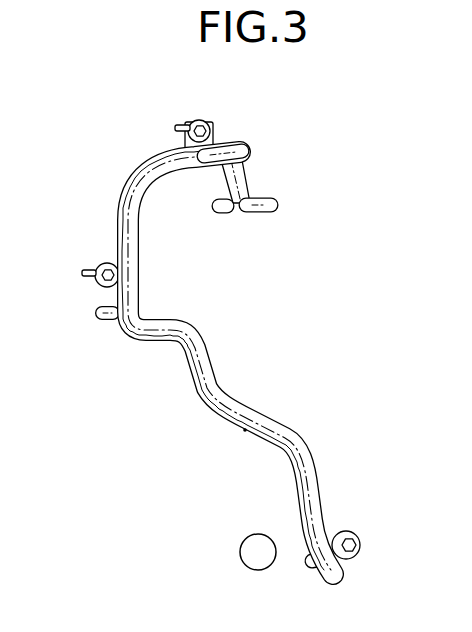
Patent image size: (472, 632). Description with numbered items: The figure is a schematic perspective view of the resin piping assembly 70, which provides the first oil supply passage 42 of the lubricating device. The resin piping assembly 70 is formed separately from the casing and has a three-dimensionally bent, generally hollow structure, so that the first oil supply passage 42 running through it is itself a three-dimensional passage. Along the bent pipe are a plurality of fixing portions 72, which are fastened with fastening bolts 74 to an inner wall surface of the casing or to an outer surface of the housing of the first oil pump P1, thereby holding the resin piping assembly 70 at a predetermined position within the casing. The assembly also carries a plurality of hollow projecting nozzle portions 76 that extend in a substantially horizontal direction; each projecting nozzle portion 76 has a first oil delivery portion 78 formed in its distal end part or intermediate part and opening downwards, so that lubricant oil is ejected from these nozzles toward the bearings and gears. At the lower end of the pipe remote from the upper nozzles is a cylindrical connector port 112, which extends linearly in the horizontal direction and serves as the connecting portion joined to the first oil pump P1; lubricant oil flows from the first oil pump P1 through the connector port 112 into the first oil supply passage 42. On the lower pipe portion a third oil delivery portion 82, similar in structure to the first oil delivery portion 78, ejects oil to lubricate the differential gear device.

The resin piping assembly 70 is at (97, 161).
The fixing portions 72 is at (213, 140).
The fastening bolts 74 is at (190, 123).
The projecting nozzle portions 76 is at (236, 152).
The first oil delivery portion 78 is at (221, 214).
The first oil supply passage 42 is at (210, 392).
The third oil delivery portion 82 is at (245, 430).
The connector port 112 is at (312, 568).
The first oil pump P1 is at (328, 563).